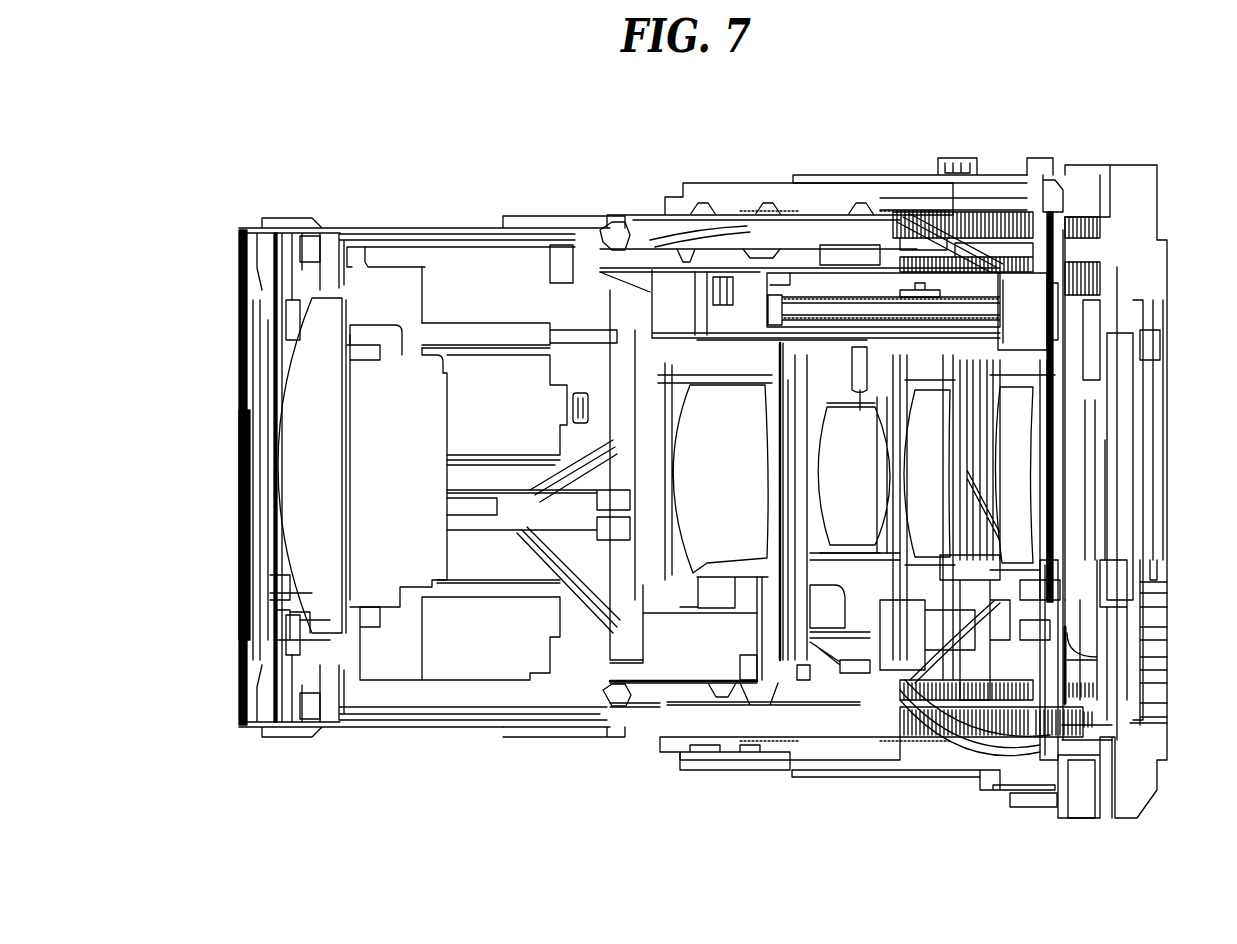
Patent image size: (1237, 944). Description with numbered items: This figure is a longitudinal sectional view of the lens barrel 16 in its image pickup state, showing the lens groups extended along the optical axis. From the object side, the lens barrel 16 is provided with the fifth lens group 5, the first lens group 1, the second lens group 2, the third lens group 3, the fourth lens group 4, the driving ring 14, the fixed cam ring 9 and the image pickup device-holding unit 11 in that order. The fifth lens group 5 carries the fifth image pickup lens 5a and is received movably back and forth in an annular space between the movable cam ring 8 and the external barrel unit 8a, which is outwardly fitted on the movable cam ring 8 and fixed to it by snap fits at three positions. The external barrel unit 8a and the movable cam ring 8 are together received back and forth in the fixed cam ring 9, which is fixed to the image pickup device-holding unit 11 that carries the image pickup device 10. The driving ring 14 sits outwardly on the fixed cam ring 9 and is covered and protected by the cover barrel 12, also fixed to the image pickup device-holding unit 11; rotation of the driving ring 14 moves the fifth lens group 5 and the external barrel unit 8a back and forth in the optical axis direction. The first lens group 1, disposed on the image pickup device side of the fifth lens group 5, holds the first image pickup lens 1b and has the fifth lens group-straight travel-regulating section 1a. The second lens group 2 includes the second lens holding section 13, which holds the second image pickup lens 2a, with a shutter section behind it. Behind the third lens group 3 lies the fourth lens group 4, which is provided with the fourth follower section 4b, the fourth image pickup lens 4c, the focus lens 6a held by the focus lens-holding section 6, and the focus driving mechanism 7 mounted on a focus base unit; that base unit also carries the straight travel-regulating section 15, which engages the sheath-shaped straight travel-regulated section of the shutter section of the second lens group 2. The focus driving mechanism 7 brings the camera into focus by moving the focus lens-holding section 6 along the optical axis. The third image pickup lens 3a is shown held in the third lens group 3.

The first lens group 1 is at (397, 660).
The fifth lens group-straight travel-regulating section 1a is at (359, 253).
The first image pickup lens 1b is at (375, 573).
The second lens group 2 is at (779, 672).
The second image pickup lens 2a is at (736, 408).
The third lens group 3 is at (913, 652).
The third lens 3a is at (860, 492).
The fourth lens group 4 is at (1051, 732).
The fourth follower section 4b is at (1052, 198).
The fourth image pickup lens 4c is at (1020, 422).
The fifth lens group 5 is at (404, 232).
The fifth image pickup lens 5a is at (320, 604).
The focus lens-holding section 6 is at (976, 672).
The focus lens 6a is at (930, 462).
The focus driving mechanism 7 is at (1025, 297).
The movable cam ring 8 is at (820, 250).
The external barrel unit 8a is at (530, 215).
The fixed cam ring 9 is at (707, 200).
The image pickup device 10 is at (1118, 358).
The image pickup device-holding unit 11 is at (1128, 175).
The cover barrel 12 is at (836, 778).
The second lens holding section 13 is at (674, 655).
The driving ring 14 is at (724, 763).
The straight travel-regulating section 15 is at (888, 292).
The lens barrel 16 is at (607, 877).